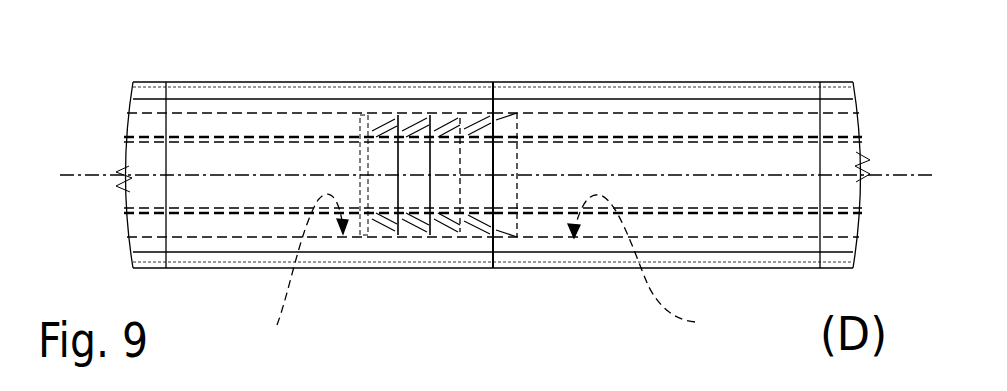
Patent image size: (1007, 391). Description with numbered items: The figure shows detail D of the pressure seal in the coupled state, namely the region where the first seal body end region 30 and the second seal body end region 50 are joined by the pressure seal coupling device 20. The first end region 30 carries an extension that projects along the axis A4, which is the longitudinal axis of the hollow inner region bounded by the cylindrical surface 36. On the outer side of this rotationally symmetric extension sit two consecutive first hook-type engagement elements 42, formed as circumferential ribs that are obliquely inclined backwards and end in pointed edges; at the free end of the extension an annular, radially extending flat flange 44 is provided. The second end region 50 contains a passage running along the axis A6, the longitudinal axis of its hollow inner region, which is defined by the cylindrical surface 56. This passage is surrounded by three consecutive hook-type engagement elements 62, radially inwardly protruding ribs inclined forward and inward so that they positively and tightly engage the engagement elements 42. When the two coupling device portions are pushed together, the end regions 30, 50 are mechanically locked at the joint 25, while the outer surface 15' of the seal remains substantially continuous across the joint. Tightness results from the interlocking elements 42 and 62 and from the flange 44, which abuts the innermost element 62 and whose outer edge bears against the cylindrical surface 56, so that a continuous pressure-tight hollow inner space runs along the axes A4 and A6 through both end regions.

The axis A6 is at (243, 175).
The axis A4 is at (645, 175).
The second seal body end region 50 is at (283, 76).
The second tubular member 15' is at (677, 135).
The first seal body end region 30 is at (780, 72).
The joint 25 is at (493, 285).
The pressure seal coupling device 20 is at (415, 180).
The flange 44 is at (362, 232).
The first hook-type engagement elements 42 is at (400, 234).
The hook-type engagement elements 62 is at (474, 55).
The cylindrical surface 56 is at (287, 271).
The cylindrical surface 36 is at (655, 271).